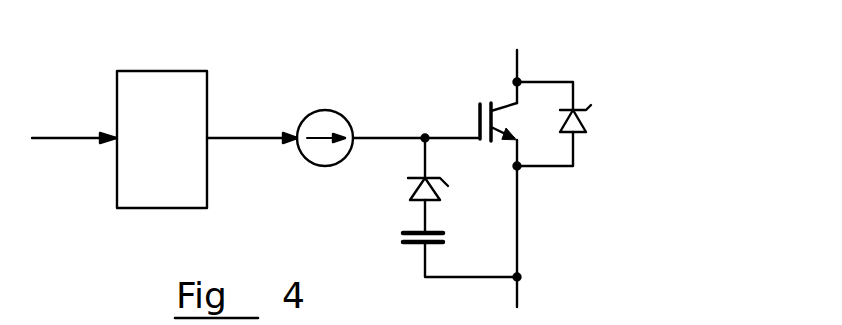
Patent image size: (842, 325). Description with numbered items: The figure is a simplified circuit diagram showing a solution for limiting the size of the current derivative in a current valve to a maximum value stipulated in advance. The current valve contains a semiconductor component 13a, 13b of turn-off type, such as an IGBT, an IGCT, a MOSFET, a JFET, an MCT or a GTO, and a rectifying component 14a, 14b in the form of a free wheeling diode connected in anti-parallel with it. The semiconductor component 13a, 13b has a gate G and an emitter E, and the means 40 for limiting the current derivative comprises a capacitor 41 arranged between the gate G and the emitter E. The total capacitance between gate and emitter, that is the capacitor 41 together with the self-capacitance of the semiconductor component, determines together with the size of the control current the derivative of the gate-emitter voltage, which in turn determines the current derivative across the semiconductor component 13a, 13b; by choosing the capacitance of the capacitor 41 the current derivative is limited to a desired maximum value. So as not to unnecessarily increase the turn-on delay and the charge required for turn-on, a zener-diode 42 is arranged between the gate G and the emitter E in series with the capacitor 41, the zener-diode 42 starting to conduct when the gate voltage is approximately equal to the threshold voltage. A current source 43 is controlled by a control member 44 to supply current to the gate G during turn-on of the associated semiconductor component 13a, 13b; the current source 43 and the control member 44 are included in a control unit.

The control member 44 is at (154, 86).
The current source 43 is at (330, 118).
The means for limiting the size of the current derivative 40 is at (362, 207).
The zener-diode 42 is at (438, 195).
The capacitor 41 is at (435, 248).
The semiconductor component of turn-off type 13a is at (482, 130).
The semiconductor component of turn-off type 13b is at (482, 130).
The gate G is at (478, 142).
The emitter E is at (519, 150).
The rectifying component 14a is at (603, 124).
The rectifying component 14b is at (587, 122).